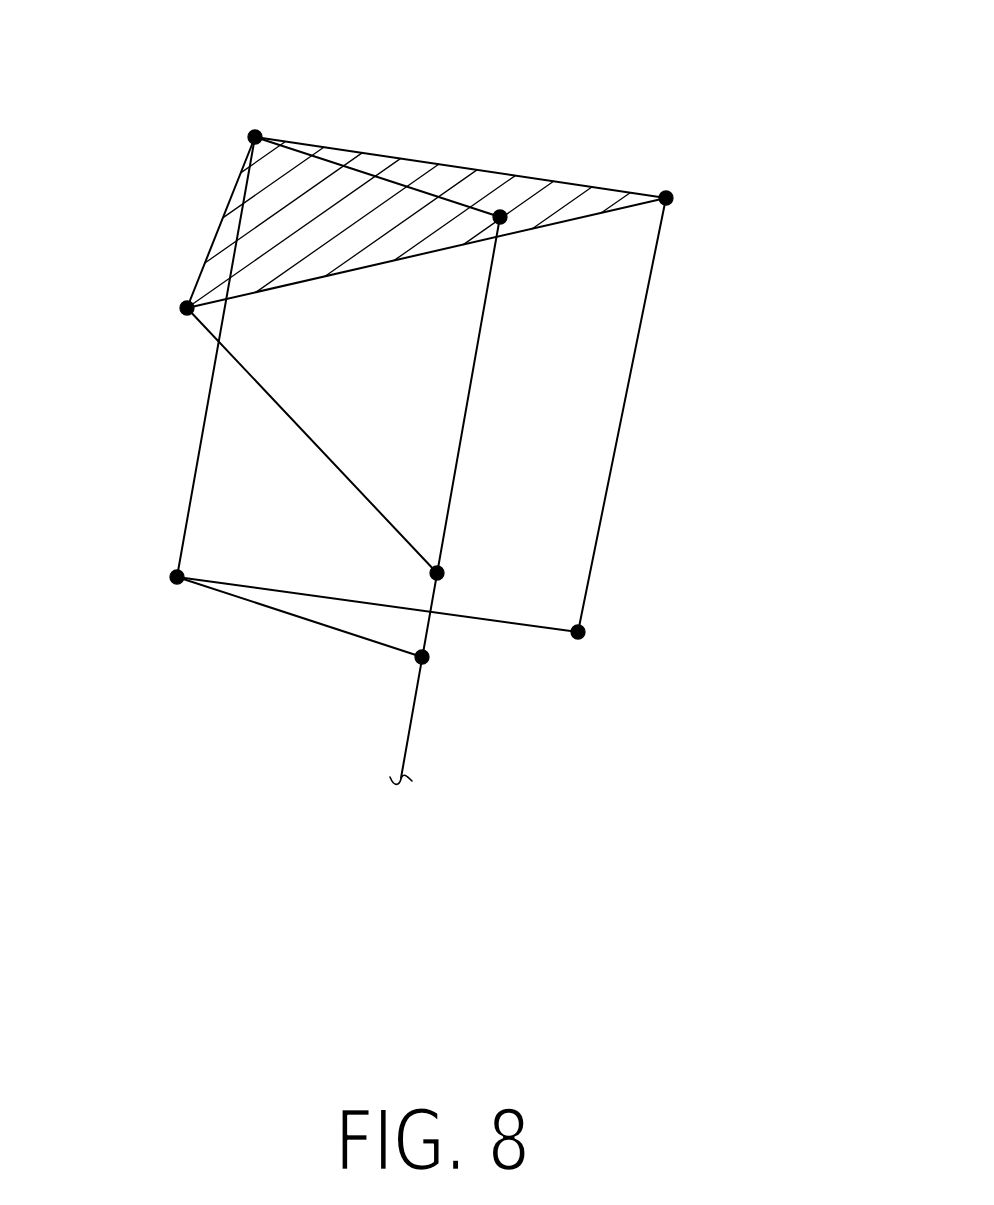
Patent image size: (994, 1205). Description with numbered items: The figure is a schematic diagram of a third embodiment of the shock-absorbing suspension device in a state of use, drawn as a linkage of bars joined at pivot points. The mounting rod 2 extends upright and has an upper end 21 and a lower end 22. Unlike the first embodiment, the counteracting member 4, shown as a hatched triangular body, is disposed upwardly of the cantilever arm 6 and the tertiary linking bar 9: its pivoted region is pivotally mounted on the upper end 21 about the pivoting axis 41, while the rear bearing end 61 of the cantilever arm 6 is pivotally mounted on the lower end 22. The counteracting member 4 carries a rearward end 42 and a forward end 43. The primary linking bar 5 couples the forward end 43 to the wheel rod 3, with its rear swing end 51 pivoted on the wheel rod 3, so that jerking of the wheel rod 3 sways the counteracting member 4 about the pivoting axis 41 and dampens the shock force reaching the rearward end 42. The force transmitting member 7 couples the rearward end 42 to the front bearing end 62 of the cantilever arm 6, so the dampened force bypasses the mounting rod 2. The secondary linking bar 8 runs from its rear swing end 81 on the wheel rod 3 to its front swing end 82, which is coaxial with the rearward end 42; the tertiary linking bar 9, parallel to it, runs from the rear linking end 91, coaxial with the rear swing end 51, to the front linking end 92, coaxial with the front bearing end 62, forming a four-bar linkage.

The mounting rod 2 is at (658, 375).
The wheel rod 3 is at (504, 334).
The counteracting member 4 is at (190, 222).
The primary linking bar 5 is at (272, 432).
The cantilever arm 6 is at (485, 641).
The force transmitting member 7 is at (184, 405).
The secondary linking bar 8 is at (381, 202).
The tertiary linking bar 9 is at (294, 642).
The upper end 21 is at (669, 190).
The lower end 22 is at (585, 636).
The pivoting axis 41 is at (785, 156).
The rearward end 42 is at (288, 81).
The forward end 43 is at (183, 305).
The rear swing end 51 is at (443, 574).
The rear bearing end 61 is at (678, 664).
The front bearing end 62 is at (172, 577).
The rear swing end of the secondary linking bar 81 is at (499, 211).
The front swing end 82 is at (258, 131).
The rear linking end 91 is at (416, 661).
The front linking end 92 is at (129, 630).